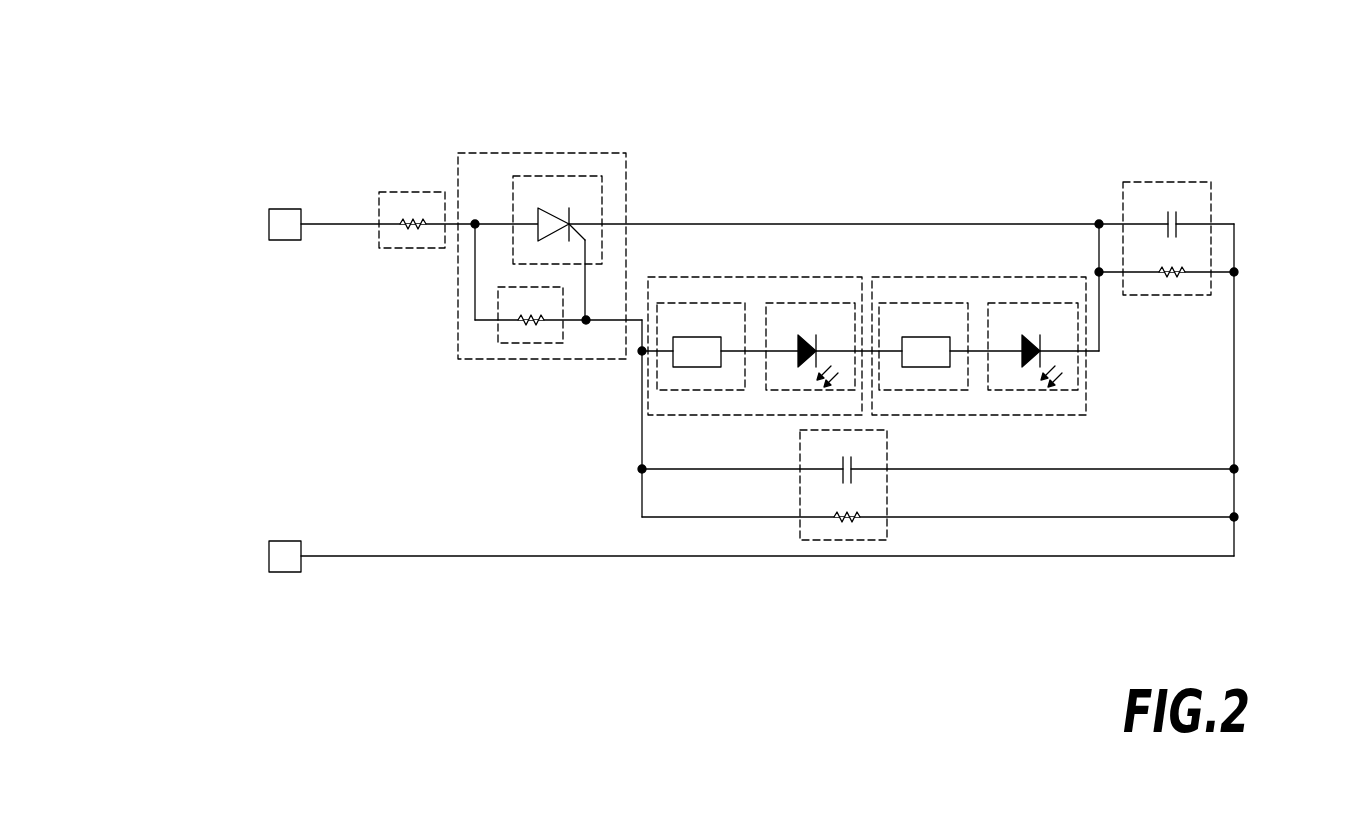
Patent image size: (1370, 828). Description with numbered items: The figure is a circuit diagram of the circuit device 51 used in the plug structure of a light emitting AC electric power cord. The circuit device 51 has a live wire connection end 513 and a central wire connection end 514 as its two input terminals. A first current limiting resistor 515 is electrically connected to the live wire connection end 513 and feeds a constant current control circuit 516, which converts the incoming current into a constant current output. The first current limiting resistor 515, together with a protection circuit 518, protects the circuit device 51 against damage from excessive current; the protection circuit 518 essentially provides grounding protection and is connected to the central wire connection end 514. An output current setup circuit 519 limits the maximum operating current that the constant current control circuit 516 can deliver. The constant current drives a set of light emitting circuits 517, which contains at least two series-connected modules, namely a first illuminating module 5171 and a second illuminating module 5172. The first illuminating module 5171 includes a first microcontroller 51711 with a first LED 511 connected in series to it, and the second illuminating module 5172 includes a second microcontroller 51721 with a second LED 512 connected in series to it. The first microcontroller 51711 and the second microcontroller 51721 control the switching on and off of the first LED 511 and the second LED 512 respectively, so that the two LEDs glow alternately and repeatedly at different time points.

The circuit device 51 is at (716, 88).
The first LED 511 is at (787, 390).
The second LED 512 is at (1078, 374).
The live wire connection end 513 is at (269, 226).
The central wire connection end 514 is at (269, 557).
The first current limiting resistor 515 is at (413, 191).
The constant current control circuit 516 is at (560, 152).
The set of light emitting circuits 517 is at (920, 125).
The first illuminating module 5171 is at (776, 277).
The second illuminating module 5172 is at (967, 277).
The first microcontroller 51711 is at (657, 372).
The second microcontroller 51721 is at (938, 390).
The protection circuit 518 is at (1168, 181).
The output current setup circuit 519 is at (887, 495).